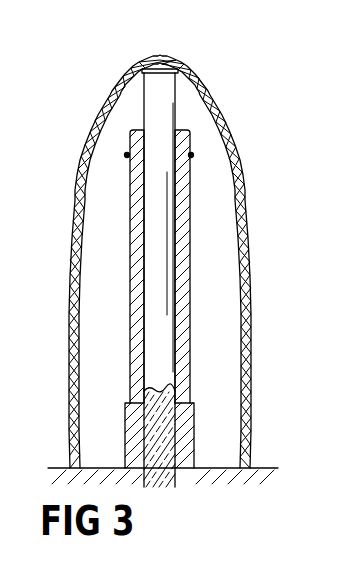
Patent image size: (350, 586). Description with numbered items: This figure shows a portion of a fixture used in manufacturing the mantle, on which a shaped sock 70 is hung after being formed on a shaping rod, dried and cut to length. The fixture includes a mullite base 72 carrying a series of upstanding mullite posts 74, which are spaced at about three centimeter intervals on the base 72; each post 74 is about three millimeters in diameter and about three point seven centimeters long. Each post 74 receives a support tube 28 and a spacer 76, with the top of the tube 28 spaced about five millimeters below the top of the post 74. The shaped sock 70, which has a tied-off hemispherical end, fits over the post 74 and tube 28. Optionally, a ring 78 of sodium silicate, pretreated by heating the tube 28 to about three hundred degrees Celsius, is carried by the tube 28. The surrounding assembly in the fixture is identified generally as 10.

The dispensing device 10 is at (191, 252).
The support tube 28 is at (183, 232).
The shaped sock 70 is at (77, 180).
The mullite base 72 is at (263, 467).
The mullite post 74 is at (165, 82).
The spacer 76 is at (195, 420).
The ring of sodium silicate 78 is at (192, 154).